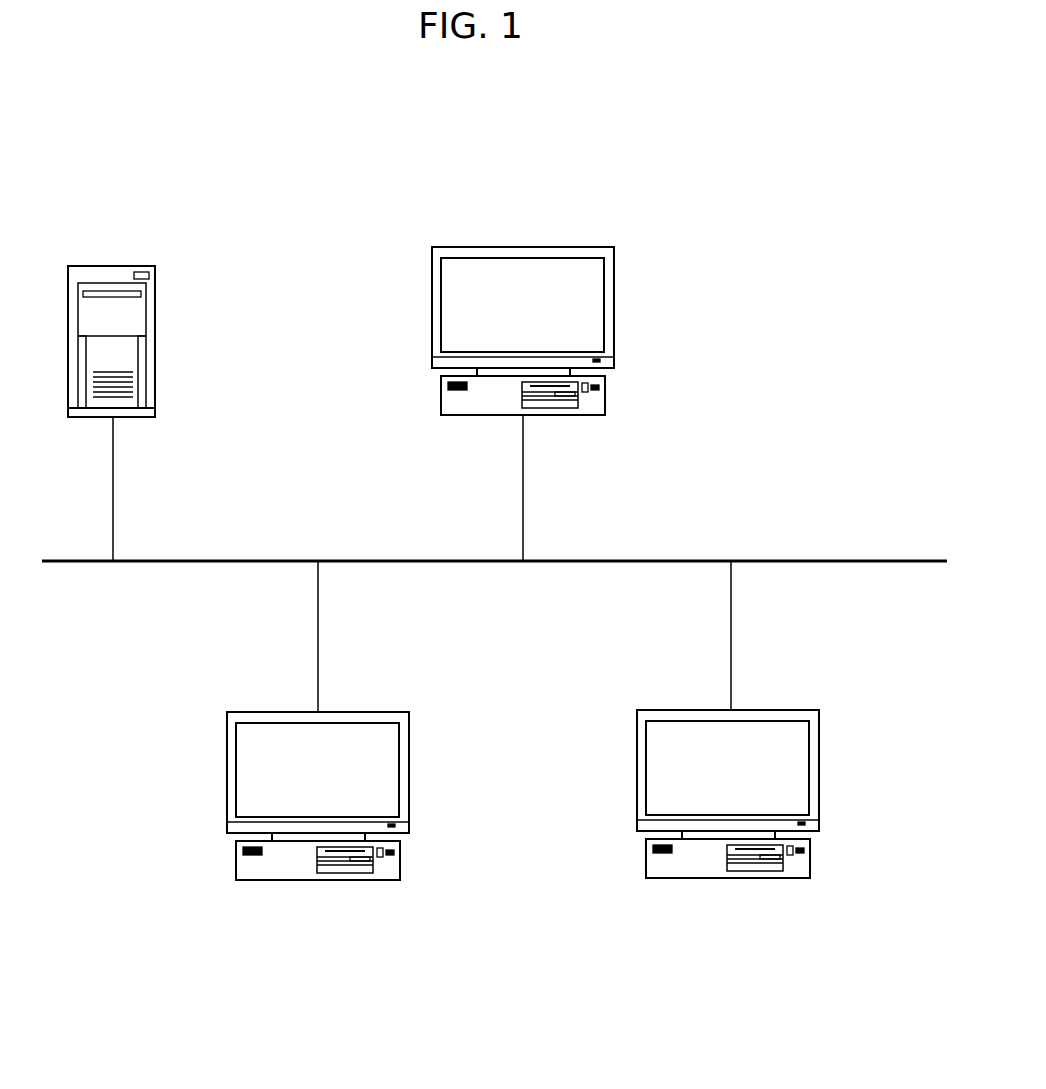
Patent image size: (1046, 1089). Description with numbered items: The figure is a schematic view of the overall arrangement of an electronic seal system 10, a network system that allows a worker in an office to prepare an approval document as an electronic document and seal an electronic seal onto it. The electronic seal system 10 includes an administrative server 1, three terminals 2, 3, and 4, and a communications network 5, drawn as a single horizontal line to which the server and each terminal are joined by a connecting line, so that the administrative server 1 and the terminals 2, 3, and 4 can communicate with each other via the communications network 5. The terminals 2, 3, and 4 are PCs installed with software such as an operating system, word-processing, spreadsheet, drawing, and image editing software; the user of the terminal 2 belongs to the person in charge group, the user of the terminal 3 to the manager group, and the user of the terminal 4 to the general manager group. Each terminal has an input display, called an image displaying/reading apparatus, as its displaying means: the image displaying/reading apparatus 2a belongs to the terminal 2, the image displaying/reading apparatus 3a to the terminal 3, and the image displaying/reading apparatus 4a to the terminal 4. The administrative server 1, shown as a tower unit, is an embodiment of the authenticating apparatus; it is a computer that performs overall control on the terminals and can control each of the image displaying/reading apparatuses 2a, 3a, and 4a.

The administrative server 1 is at (155, 305).
The terminal 2 is at (568, 404).
The image displaying/reading apparatus 2a is at (614, 303).
The terminal 3 is at (366, 720).
The image displaying/reading apparatus 3a is at (410, 765).
The terminal 4 is at (777, 719).
The image displaying/reading apparatus 4a is at (822, 763).
The communications network 5 is at (843, 559).
The electronic seal system 10 is at (790, 190).